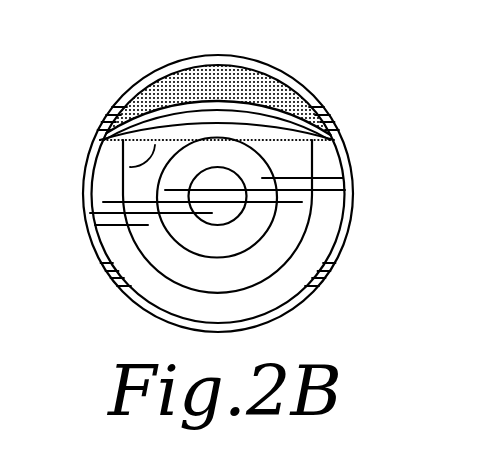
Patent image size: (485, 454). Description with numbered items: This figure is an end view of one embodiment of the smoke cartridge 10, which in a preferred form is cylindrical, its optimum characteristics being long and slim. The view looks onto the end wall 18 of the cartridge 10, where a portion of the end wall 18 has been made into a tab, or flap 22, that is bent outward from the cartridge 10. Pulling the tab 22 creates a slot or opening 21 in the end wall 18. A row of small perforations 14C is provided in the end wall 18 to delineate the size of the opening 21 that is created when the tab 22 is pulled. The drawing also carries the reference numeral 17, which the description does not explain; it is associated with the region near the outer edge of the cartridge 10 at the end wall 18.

The cartridge 10 is at (290, 75).
The inner sheath 17 is at (217, 334).
The end wall 18 is at (293, 280).
The opening 21 is at (168, 100).
The tab 22 is at (222, 108).
The row of small perforations 14C is at (130, 167).